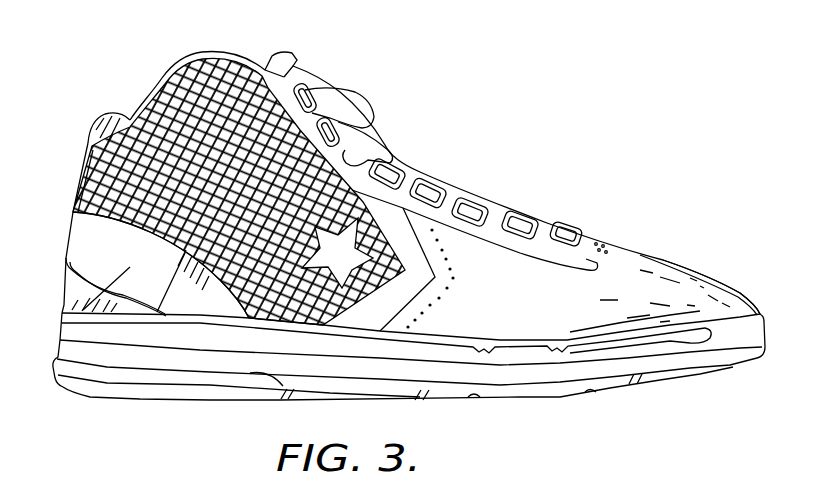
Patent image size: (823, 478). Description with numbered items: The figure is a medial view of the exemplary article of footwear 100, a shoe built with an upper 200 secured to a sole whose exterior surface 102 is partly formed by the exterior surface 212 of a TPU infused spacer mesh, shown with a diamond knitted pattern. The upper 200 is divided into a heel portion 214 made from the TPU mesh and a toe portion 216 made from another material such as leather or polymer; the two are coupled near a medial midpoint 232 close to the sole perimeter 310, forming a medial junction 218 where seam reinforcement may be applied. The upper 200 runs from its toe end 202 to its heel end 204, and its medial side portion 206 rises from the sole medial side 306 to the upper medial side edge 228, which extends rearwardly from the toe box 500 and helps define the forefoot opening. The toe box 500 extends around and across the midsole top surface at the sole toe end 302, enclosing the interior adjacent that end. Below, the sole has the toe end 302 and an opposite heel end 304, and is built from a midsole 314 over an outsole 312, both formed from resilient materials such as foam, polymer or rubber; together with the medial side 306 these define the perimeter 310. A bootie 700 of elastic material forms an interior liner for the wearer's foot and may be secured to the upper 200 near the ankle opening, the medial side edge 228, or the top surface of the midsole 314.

The article of footwear 100 is at (617, 125).
The exterior surface 102 is at (517, 292).
The upper 200 is at (220, 98).
The toe end 202 is at (751, 291).
The heel end 204 is at (70, 194).
The medial side portion 206 is at (462, 316).
The exterior surface 212 is at (180, 87).
The heel portion 214 is at (310, 94).
The toe portion 216 is at (608, 309).
The medial junction 218 is at (407, 297).
The upper medial side edge 228 is at (425, 170).
The medial midpoint 232 is at (382, 337).
The toe end 302 is at (771, 320).
The heel end 304 is at (58, 333).
The medial side 306 is at (437, 374).
The perimeter 310 is at (250, 328).
The outsole 312 is at (142, 406).
The midsole 314 is at (52, 348).
The toe box 500 is at (693, 266).
The bootie 700 is at (91, 108).